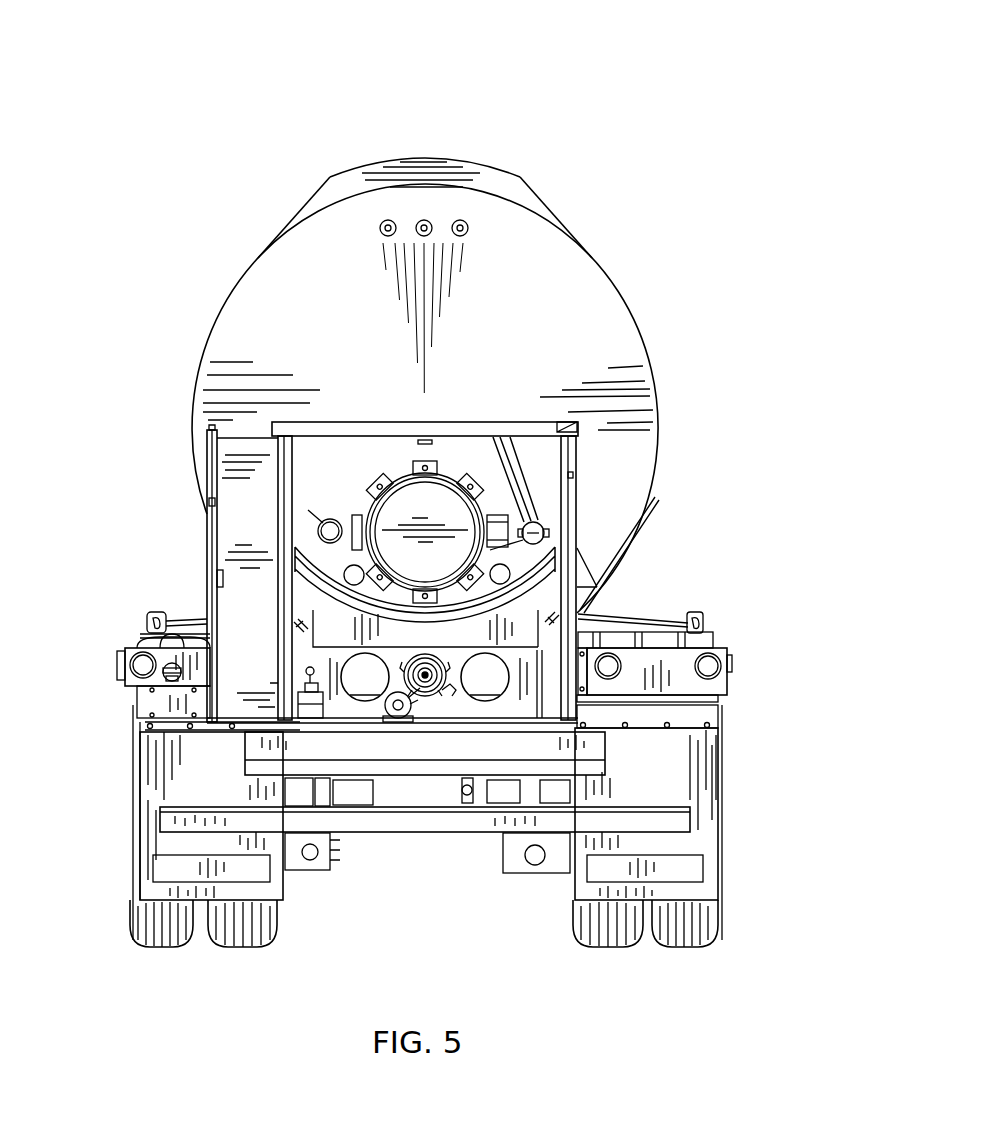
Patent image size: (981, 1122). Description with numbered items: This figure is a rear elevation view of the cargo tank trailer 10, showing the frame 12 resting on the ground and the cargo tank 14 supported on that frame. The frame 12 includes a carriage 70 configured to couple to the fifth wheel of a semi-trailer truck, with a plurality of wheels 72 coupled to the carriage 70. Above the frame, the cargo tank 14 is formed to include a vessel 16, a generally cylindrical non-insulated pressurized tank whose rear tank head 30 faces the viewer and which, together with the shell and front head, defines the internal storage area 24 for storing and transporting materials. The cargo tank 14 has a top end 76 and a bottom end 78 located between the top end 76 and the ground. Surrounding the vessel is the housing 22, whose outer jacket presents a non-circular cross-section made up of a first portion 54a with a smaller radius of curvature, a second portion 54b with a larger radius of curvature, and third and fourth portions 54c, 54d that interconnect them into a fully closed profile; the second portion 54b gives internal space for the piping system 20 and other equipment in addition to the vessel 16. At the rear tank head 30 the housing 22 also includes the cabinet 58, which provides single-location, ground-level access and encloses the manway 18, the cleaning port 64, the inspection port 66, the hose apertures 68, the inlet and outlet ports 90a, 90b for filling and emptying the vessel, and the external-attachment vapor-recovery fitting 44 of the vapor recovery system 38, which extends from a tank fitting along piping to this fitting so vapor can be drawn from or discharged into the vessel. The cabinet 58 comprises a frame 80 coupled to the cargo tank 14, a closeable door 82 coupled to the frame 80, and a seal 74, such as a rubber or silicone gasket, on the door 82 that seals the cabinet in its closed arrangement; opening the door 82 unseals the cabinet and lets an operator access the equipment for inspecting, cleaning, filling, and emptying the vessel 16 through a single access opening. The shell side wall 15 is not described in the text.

The cargo tank trailer 10 is at (658, 125).
The frame 12 is at (727, 782).
The cargo tank 14 is at (200, 263).
The tank side wall 15 is at (257, 258).
The vessel 16 is at (575, 360).
The manway 18 is at (405, 505).
The piping system 20 is at (460, 188).
The housing 22 is at (290, 195).
The internal storage area 24 is at (478, 378).
The rear tank head 30 is at (553, 280).
The vapor recovery system 38 is at (522, 455).
The external-attachment vapor-recovery fitting 44 is at (545, 522).
The first portion of the outer jacket 54a is at (188, 385).
The second portion of the outer jacket 54b is at (432, 150).
The third portion of the outer jacket 54c is at (285, 210).
The fourth portion of the outer jacket 54d is at (565, 195).
The cabinet 58 is at (207, 598).
The cleaning port 64 is at (354, 565).
The inspection port 66 is at (510, 565).
The hose apertures 68 is at (355, 705).
The carriage 70 is at (732, 648).
The wheels 72 is at (724, 922).
The seal 74 is at (209, 463).
The top end 76 is at (372, 143).
The bottom end 78 is at (613, 598).
The frame of the cabinet 80 is at (397, 420).
The closeable door 82 is at (230, 668).
The inlet port 90a is at (427, 705).
The outlet port 90b is at (398, 705).